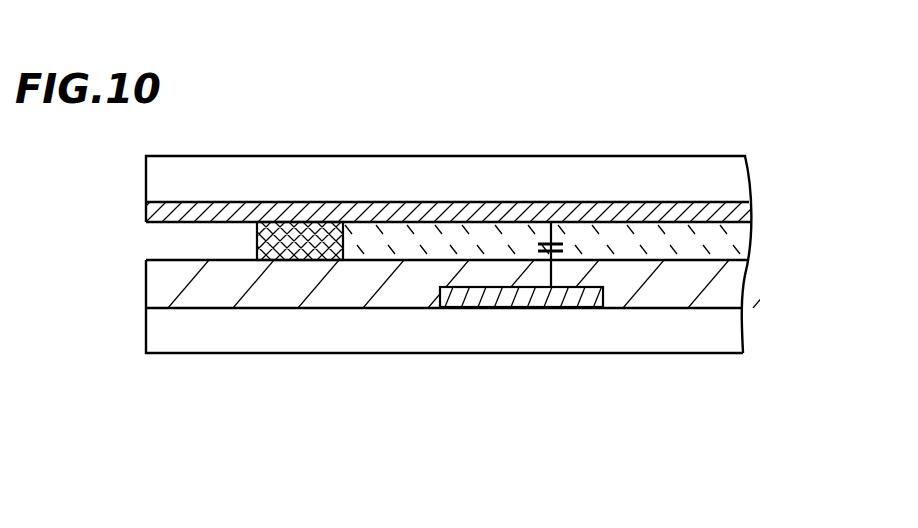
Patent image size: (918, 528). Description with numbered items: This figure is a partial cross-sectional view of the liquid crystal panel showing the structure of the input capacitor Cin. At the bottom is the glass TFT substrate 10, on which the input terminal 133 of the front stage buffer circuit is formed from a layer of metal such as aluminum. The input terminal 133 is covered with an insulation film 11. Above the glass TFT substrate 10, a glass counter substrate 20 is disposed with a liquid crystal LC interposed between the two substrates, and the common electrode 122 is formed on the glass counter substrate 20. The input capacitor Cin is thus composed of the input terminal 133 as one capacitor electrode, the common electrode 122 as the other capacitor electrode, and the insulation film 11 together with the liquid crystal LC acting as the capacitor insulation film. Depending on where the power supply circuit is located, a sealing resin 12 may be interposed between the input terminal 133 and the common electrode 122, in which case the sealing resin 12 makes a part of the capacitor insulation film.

The glass counter substrate 20 is at (733, 185).
The common electrode 122 is at (386, 212).
The sealing resin 12 is at (302, 232).
The liquid crystal LC is at (620, 233).
The insulation film 11 is at (725, 292).
The glass TFT substrate 10 is at (733, 337).
The input terminal 133 is at (532, 308).
The input capacitor Cin is at (570, 247).